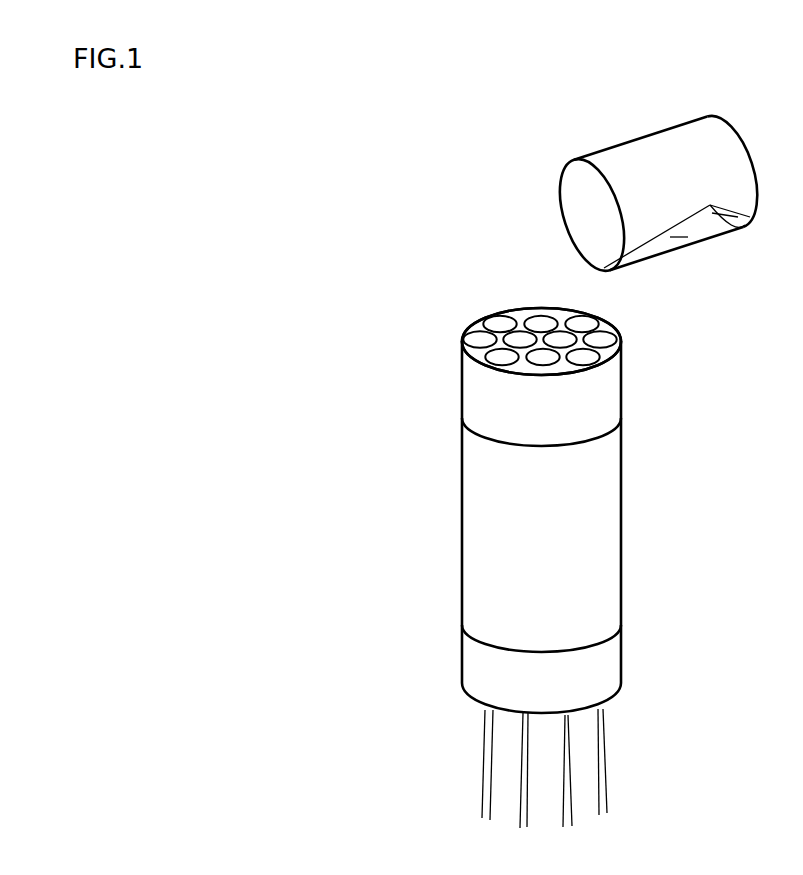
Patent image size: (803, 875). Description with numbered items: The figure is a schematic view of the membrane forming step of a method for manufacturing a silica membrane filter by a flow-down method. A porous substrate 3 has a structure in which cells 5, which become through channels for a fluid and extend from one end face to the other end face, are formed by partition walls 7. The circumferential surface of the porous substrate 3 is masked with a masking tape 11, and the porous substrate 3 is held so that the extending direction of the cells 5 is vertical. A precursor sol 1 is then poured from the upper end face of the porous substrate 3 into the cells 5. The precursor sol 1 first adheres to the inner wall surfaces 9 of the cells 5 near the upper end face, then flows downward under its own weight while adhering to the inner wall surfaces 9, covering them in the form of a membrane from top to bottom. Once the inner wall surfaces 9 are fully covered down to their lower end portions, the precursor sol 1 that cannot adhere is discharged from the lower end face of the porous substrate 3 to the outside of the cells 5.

The precursor sol 1 is at (700, 228).
The porous substrate 3 is at (548, 543).
The cell 5 is at (500, 325).
The partition wall 7 is at (520, 328).
The inner wall surface 9 is at (478, 336).
The masking tape 11 is at (602, 521).